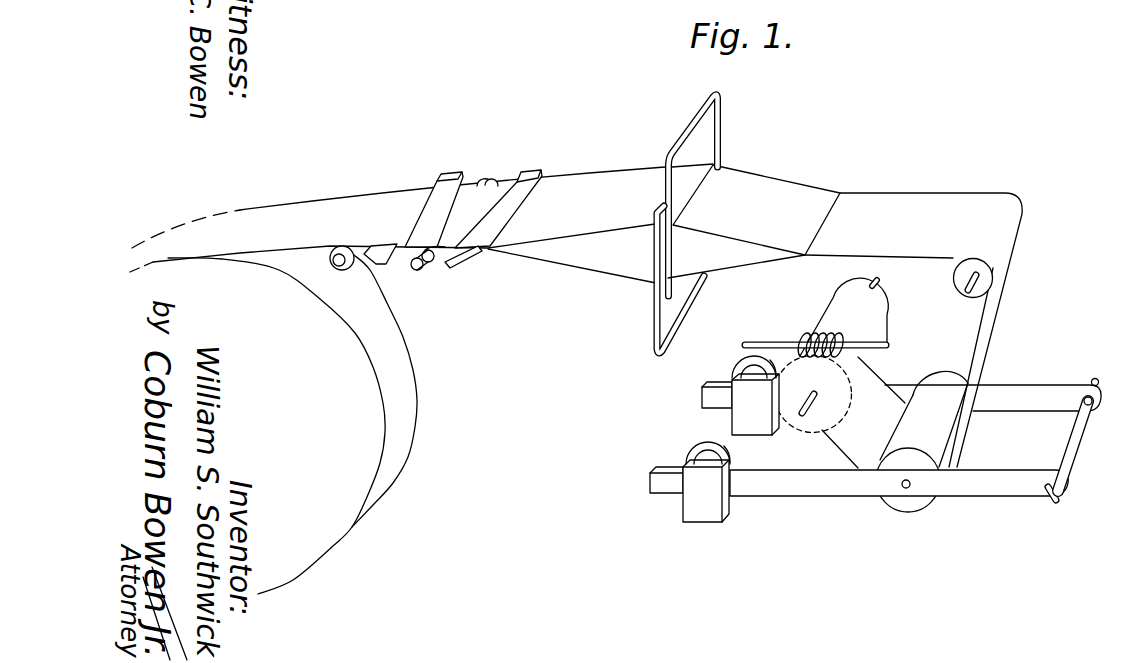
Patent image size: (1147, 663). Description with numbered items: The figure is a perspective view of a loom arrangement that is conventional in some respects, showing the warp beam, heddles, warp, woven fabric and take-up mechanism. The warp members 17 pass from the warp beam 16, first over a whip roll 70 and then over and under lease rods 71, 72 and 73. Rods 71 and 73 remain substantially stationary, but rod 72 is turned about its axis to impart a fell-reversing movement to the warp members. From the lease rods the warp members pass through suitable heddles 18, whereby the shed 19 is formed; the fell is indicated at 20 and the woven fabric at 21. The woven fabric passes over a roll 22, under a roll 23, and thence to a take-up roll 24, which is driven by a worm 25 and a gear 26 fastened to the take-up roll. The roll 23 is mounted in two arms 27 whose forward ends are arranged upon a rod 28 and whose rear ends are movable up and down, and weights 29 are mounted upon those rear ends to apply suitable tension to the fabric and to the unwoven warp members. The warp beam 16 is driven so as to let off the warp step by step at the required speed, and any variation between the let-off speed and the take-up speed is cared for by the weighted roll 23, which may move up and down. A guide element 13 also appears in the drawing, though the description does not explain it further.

The guide rod 13 is at (650, 344).
The warp beam 16 is at (292, 424).
The warp members 17 is at (562, 186).
The heddles 18 is at (697, 119).
The shed 19 is at (770, 183).
The fell 20 is at (836, 227).
The woven fabric 21 is at (968, 198).
The roll 22 is at (990, 283).
The roll 23 is at (907, 502).
The take-up roll 24 is at (840, 297).
The worm 25 is at (815, 336).
The gear 26 is at (812, 434).
The arms 27 is at (822, 486).
The rod 28 is at (1075, 441).
The weights 29 is at (736, 419).
The whip roll 70 is at (338, 247).
The lease rod 71 is at (441, 176).
The lease rod 72 is at (488, 171).
The lease rod 73 is at (530, 172).